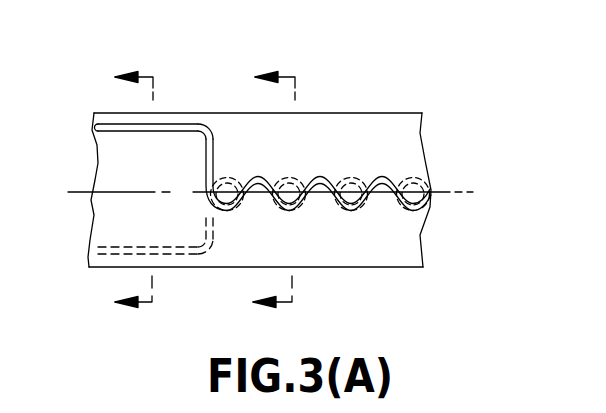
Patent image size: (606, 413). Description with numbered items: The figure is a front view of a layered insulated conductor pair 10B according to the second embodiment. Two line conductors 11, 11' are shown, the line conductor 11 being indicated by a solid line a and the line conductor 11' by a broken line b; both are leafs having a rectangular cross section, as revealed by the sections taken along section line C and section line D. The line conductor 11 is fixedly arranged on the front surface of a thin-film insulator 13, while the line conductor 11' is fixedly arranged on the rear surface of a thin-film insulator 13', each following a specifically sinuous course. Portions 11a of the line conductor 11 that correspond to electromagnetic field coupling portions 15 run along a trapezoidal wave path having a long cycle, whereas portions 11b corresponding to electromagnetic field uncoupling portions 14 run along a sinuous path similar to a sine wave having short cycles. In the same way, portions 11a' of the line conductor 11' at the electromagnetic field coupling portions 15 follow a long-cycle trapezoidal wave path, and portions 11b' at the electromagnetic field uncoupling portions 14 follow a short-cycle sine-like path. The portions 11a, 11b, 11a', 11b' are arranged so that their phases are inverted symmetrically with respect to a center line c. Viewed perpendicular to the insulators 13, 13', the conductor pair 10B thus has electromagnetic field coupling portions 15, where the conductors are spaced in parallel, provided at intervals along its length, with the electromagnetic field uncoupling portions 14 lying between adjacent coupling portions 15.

The layered insulated conductor pair 10B is at (426, 106).
The line conductor 11 is at (256, 105).
The portions of the line conductor corresponding to electromagnetic field coupling p 11a is at (147, 69).
The portions of the line conductor corresponding to electromagnetic field uncoupling 11b is at (342, 157).
The line conductor 11' is at (277, 289).
The portions of the line conductor corresponding to electromagnetic field coupling p 11a' is at (134, 306).
The portions of the line conductor corresponding to electromagnetic field uncoupling 11b' is at (345, 270).
The insulator 13 is at (259, 156).
The insulator 13' is at (256, 293).
The electromagnetic field uncoupling portions 14 is at (318, 177).
The electromagnetic field coupling portions 15 is at (118, 130).
The solid line a is at (209, 128).
The broken line b is at (212, 250).
The center line c is at (440, 190).
The section line C— C is at (134, 190).
The section line D— D is at (274, 190).